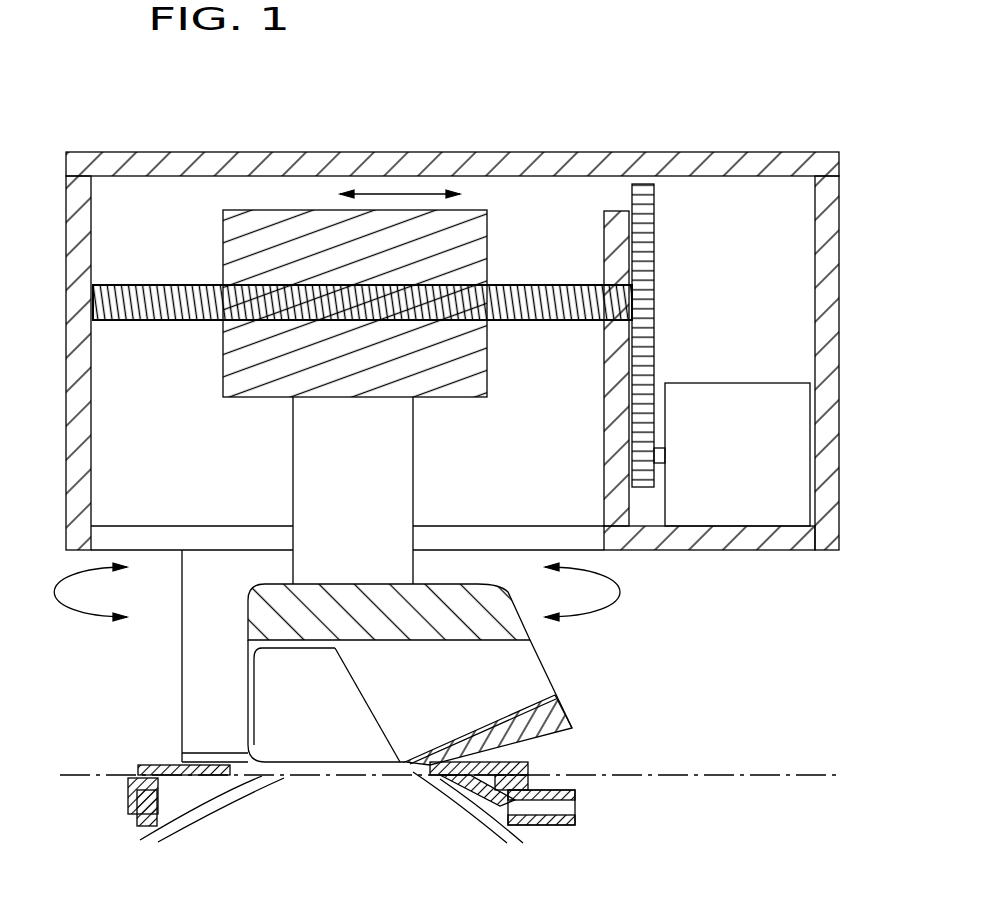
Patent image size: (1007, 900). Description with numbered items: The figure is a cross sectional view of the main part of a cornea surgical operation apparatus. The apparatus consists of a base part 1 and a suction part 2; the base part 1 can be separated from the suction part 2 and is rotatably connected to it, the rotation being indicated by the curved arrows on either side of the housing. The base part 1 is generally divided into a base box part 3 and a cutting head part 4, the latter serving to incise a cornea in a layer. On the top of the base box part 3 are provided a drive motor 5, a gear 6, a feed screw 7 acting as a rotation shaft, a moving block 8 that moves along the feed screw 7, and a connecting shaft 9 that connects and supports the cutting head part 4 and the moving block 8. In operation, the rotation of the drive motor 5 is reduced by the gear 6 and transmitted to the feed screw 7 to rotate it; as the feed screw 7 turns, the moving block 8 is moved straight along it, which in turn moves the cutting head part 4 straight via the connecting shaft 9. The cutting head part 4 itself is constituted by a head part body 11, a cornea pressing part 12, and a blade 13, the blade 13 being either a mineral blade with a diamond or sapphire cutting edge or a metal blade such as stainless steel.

The base part 1 is at (787, 657).
The suction part 2 is at (650, 835).
The base box part 3 is at (203, 697).
The cutting head part 4 is at (489, 729).
The drive motor 5 is at (767, 473).
The gear 6 is at (668, 325).
The feed screw 7 is at (522, 290).
The moving block 8 is at (310, 245).
The connecting shaft 9 is at (330, 462).
The head part body 11 is at (514, 725).
The cornea pressing part 12 is at (312, 740).
The blade 13 is at (460, 740).